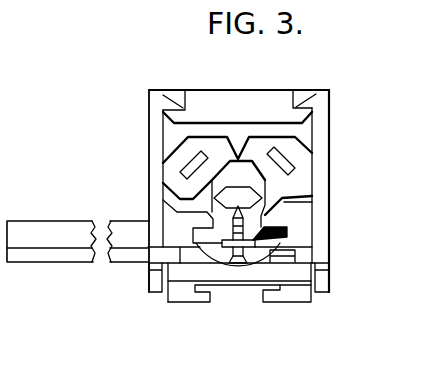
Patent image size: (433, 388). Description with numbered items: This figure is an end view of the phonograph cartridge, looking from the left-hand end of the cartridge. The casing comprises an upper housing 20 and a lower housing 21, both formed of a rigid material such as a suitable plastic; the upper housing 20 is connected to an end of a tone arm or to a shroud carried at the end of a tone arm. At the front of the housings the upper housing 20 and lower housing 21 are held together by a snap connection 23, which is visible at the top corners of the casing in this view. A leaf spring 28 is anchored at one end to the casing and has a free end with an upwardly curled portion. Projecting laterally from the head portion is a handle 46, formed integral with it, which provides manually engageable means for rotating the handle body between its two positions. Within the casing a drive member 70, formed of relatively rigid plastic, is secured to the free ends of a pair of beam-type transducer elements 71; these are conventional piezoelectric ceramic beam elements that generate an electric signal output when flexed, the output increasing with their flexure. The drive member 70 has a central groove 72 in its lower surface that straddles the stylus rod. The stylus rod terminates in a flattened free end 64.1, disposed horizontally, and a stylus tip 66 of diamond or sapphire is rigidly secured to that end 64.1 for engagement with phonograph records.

The upper housing 20 is at (241, 97).
The lower housing 21 is at (325, 240).
The snap connection 23 is at (157, 96).
The leaf spring 28 is at (296, 301).
The handle 46 is at (29, 228).
The flattened free end of stylus rod 64.1 is at (229, 252).
The stylus tip 66 is at (256, 260).
The drive member 70 is at (303, 177).
The beam-type transducer elements 71 is at (192, 160).
The central groove 72 is at (266, 230).